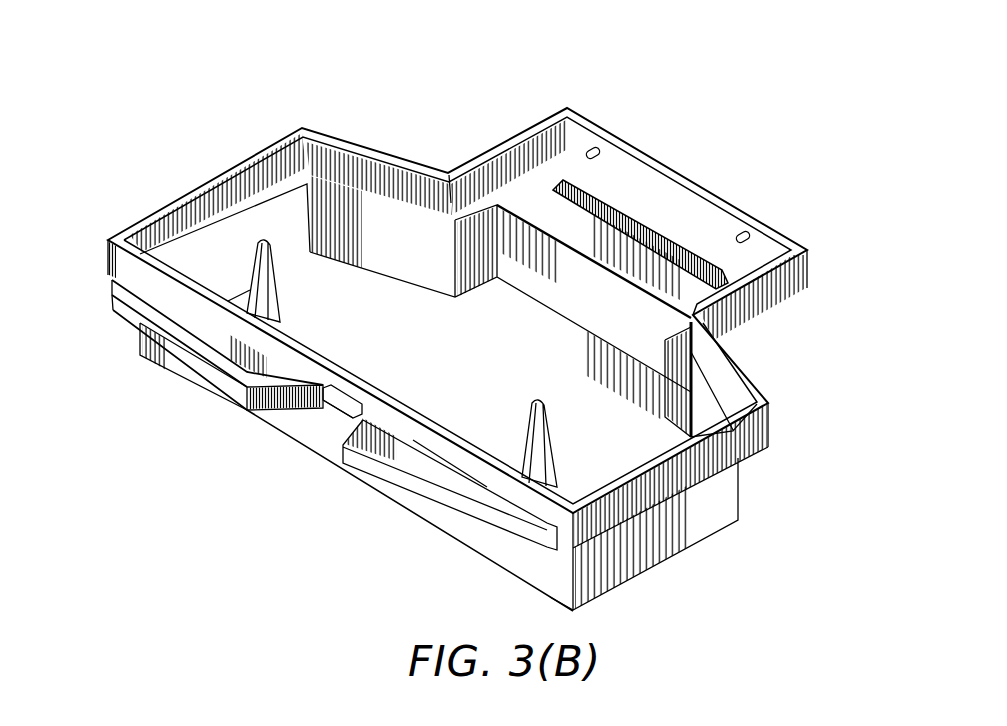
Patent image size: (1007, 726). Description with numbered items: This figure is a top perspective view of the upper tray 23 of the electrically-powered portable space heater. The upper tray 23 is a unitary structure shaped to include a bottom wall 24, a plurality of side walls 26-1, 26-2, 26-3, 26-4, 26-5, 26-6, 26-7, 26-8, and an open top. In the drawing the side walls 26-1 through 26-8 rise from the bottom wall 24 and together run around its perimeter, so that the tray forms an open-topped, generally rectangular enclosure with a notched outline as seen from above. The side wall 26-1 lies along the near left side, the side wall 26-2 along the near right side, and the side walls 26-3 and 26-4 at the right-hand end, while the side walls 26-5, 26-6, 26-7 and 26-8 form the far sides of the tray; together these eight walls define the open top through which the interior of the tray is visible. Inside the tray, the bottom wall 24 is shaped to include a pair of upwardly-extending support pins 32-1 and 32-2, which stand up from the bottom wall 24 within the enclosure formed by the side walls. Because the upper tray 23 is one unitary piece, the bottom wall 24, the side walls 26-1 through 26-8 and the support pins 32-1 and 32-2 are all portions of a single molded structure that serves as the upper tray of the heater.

The upper tray 23 is at (808, 142).
The bottom wall 24 is at (647, 447).
The side wall 26-1 is at (287, 423).
The side wall 26-2 is at (667, 540).
The side wall 26-3 is at (683, 392).
The side wall 26-4 is at (735, 350).
The side wall 26-5 is at (595, 275).
The side wall 26-6 is at (480, 177).
The side wall 26-7 is at (377, 182).
The side wall 26-8 is at (367, 222).
The support pin 32-1 is at (260, 313).
The support pin 32-2 is at (527, 443).